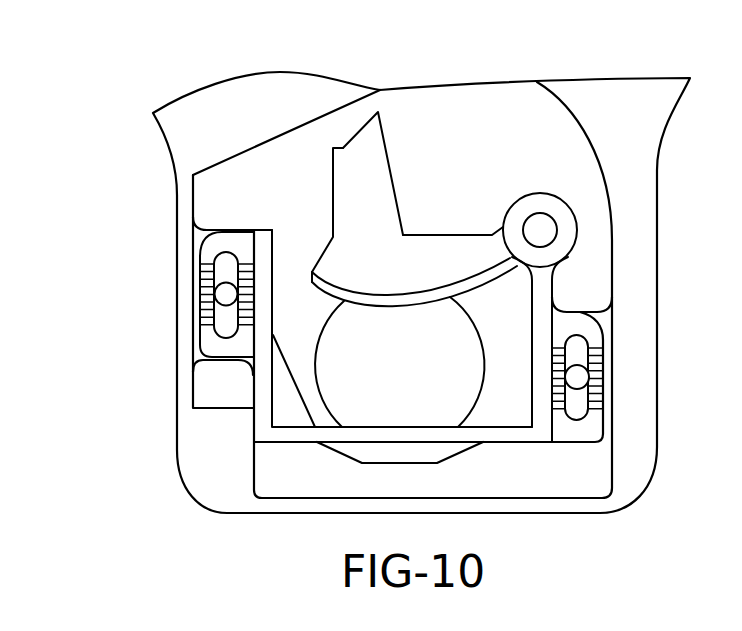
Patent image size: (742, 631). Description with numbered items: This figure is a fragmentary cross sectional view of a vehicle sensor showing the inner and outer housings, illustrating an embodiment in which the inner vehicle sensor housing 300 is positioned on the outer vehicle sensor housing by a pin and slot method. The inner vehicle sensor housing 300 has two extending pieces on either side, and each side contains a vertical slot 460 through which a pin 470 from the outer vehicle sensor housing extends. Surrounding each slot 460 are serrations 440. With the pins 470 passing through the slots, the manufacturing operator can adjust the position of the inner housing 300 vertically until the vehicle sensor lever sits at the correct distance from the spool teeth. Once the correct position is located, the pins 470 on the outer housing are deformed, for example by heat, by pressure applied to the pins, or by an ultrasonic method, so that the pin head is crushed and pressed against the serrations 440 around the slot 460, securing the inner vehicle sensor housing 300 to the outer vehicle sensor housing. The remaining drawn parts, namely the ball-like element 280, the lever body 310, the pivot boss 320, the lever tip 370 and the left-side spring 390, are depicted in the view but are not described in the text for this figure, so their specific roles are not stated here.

The ball 280 is at (337, 390).
The inner vehicle sensor housing 300 is at (260, 376).
The lever 310 is at (350, 195).
The pivot boss 320 is at (547, 227).
The lever tip 370 is at (378, 122).
The spring 390 is at (197, 314).
The serrations 440 is at (598, 382).
The vertical slot 460 is at (585, 418).
The pin 470 is at (577, 373).